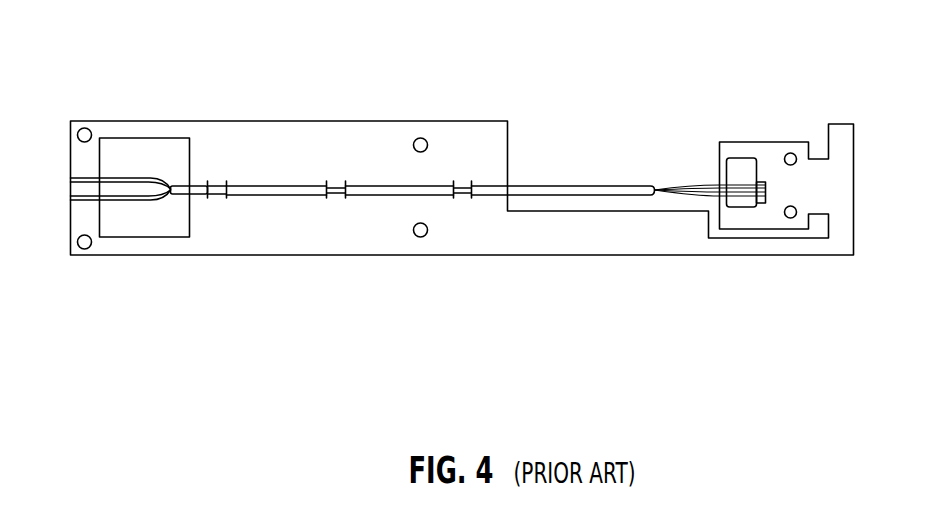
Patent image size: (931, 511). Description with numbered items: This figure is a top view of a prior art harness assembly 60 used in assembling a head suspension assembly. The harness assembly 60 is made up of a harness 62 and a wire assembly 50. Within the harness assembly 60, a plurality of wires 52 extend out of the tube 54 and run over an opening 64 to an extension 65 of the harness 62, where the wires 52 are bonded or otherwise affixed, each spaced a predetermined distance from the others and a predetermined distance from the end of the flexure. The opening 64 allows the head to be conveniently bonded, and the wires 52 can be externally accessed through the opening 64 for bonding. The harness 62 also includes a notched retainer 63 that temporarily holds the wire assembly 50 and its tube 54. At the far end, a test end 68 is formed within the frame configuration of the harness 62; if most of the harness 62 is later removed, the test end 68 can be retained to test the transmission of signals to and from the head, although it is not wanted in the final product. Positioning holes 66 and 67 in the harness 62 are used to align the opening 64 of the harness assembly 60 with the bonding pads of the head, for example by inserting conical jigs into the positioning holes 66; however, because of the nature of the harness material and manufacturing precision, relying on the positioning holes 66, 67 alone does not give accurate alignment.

The wire assembly 50 is at (548, 148).
The wires 52 is at (150, 197).
The tube 54 is at (597, 186).
The harness assembly 60 is at (453, 346).
The harness 62 is at (598, 256).
The notched retainer 63 is at (336, 199).
The opening 64 is at (138, 138).
The extension 65 is at (92, 197).
The positioning holes 66 is at (85, 128).
The positioning holes 67 is at (420, 138).
The test end 68 is at (750, 142).